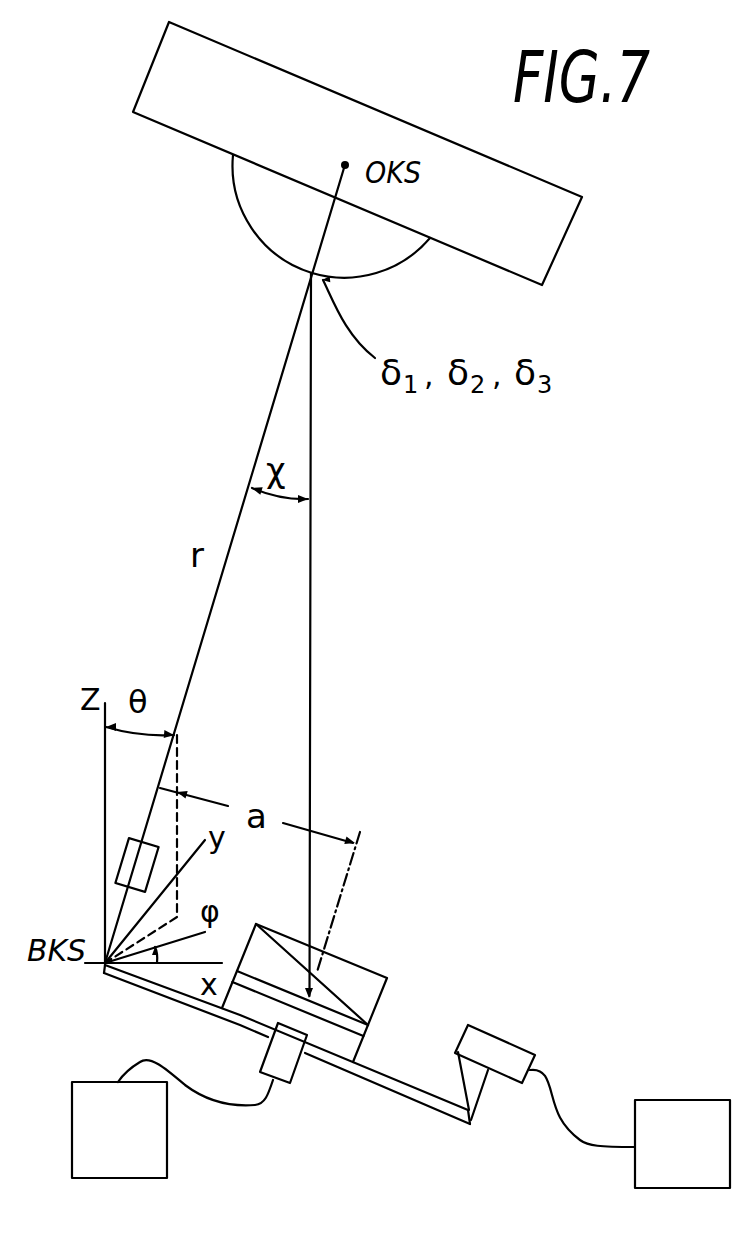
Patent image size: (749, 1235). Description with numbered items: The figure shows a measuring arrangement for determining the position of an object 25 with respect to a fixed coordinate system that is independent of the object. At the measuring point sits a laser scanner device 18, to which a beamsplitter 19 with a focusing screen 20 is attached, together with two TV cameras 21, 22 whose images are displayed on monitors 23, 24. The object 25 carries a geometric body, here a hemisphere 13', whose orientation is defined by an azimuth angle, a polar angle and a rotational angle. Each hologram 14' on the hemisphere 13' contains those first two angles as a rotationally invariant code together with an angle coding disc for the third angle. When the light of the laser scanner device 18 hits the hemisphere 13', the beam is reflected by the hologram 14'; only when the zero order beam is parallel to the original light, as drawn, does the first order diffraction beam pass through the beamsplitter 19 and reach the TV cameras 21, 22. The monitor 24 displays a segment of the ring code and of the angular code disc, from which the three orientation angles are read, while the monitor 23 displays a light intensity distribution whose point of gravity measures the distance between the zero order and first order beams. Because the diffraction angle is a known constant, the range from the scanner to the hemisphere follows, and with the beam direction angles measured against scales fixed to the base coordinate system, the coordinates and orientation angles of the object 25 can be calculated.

The object 25 is at (557, 228).
The hemisphere 13' is at (381, 281).
The hologram 14' is at (266, 238).
The laser scanner device 18 is at (132, 863).
The beamsplitter 19 is at (363, 982).
The focusing screen 20 is at (366, 1027).
The TV camera 21 is at (503, 1053).
The TV camera 22 is at (285, 1062).
The monitor 23 is at (155, 1139).
The monitor 24 is at (692, 1108).